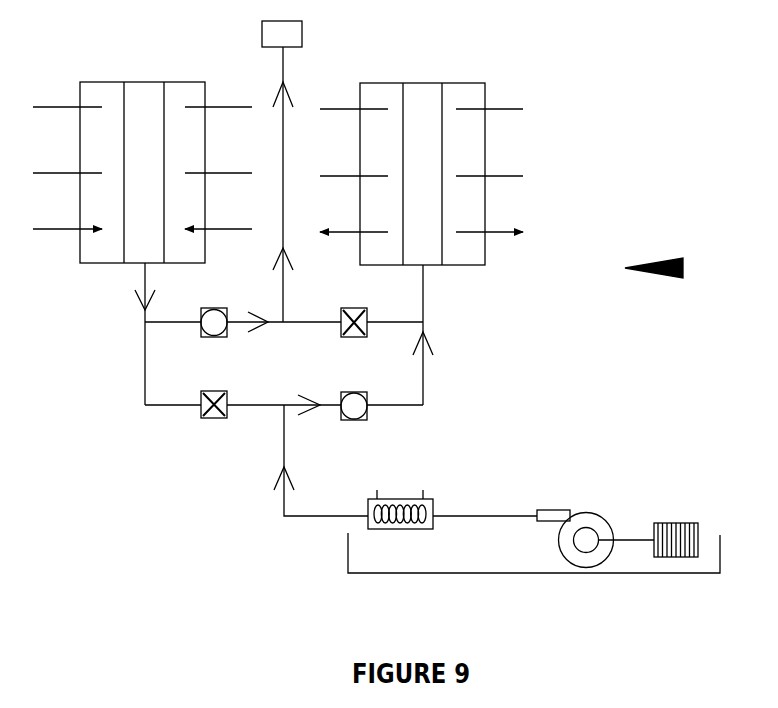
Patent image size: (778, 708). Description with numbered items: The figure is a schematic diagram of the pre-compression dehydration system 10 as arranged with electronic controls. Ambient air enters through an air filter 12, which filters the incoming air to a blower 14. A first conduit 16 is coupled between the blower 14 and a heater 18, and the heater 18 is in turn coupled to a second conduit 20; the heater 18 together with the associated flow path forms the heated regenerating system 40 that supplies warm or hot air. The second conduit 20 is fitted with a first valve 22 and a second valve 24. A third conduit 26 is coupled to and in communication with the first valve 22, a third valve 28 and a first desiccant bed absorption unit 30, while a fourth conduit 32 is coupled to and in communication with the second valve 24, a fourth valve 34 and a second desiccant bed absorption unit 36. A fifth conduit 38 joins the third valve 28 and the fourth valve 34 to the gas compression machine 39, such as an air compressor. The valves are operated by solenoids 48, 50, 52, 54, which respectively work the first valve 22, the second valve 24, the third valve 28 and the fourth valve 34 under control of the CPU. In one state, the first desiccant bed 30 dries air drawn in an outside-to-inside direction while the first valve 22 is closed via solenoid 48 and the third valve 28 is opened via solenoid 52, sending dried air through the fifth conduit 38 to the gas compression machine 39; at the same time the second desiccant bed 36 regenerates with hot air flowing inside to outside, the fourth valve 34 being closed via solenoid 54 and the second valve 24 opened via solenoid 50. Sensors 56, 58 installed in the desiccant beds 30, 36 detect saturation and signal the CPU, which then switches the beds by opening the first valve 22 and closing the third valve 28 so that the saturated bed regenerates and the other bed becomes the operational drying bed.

The pre-compression dehydration system 10 is at (683, 269).
The air filter 12 is at (678, 522).
The blower 14 is at (595, 512).
The first conduit 16 is at (477, 513).
The heater 18 is at (400, 498).
The second conduit 20 is at (302, 517).
The first valve 22 is at (187, 416).
The second valve 24 is at (381, 415).
The third conduit 26 is at (143, 345).
The third valve 28 is at (233, 330).
The first desiccant bed absorption unit 30 is at (142, 194).
The fourth conduit 32 is at (425, 306).
The fourth valve 34 is at (335, 331).
The second desiccant bed absorption unit 36 is at (432, 155).
The fifth conduit 38 is at (285, 281).
The gas compression machine 39 is at (282, 34).
The heated regenerating system 40 is at (523, 573).
The solenoid 48 is at (207, 395).
The solenoid 50 is at (361, 396).
The solenoid 52 is at (207, 311).
The solenoid 54 is at (359, 312).
The sensor 56 is at (72, 168).
The sensor 58 is at (488, 170).